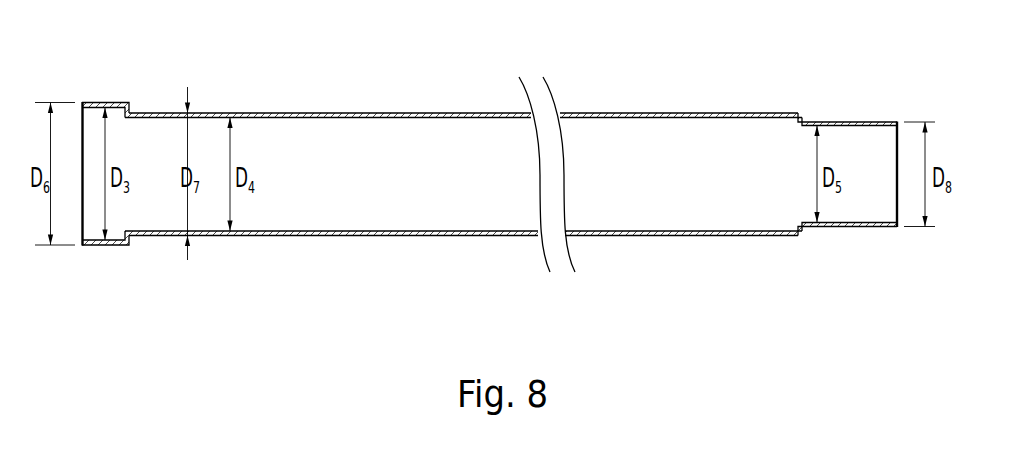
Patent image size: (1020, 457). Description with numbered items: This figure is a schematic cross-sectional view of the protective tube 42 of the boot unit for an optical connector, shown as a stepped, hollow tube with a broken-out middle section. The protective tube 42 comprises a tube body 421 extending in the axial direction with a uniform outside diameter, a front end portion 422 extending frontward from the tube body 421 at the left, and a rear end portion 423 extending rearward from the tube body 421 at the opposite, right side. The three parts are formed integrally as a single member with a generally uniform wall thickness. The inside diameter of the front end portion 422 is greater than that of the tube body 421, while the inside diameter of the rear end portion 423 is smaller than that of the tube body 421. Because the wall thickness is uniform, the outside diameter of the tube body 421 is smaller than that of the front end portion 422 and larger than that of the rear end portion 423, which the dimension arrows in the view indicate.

The protective tube 42 is at (496, 136).
The tube body 421 is at (282, 113).
The front end portion 422 is at (100, 102).
The rear end portion 423 is at (838, 121).